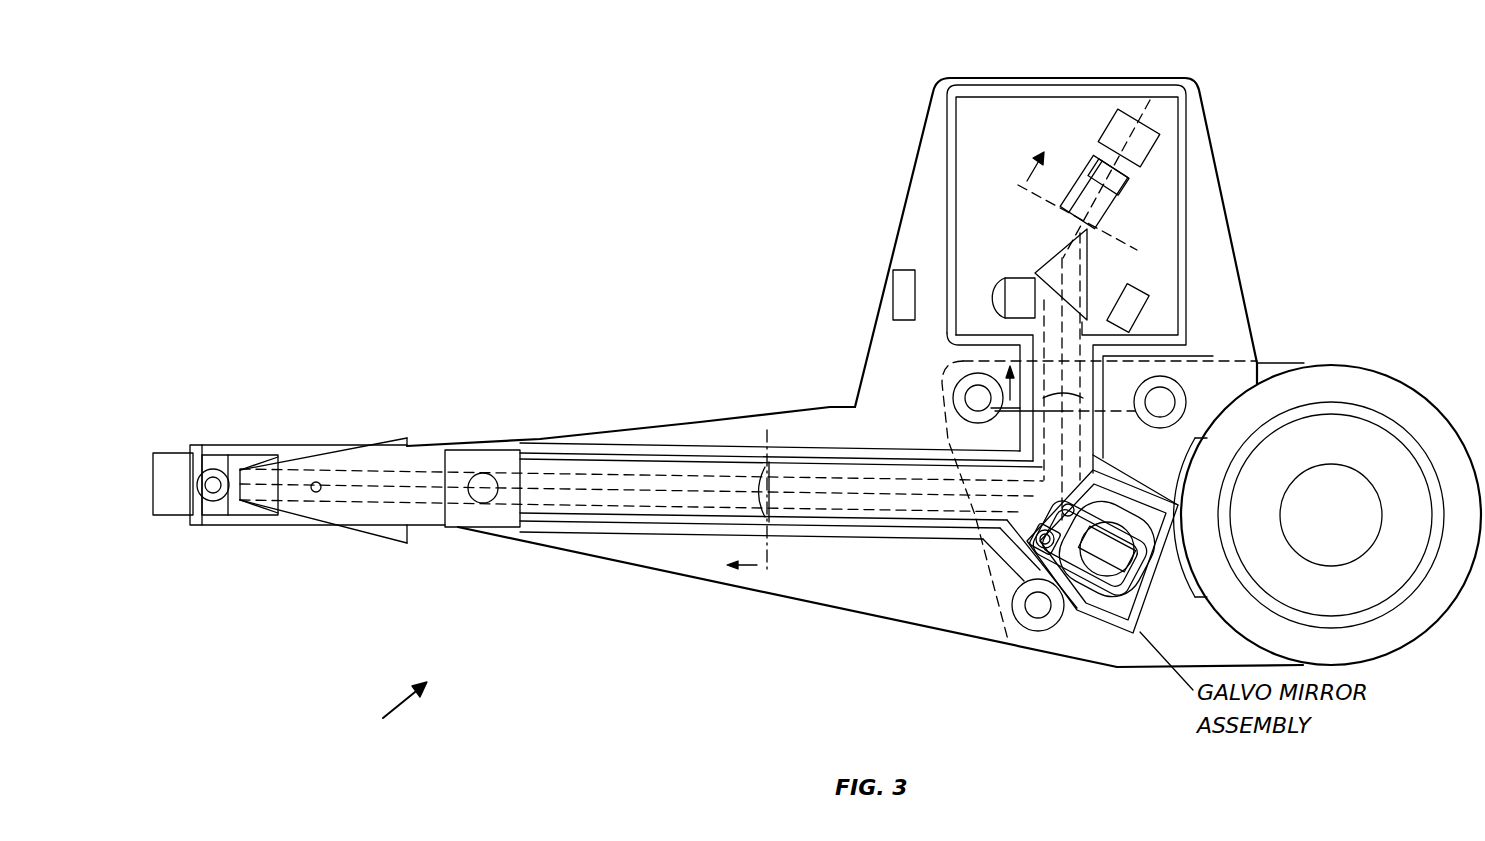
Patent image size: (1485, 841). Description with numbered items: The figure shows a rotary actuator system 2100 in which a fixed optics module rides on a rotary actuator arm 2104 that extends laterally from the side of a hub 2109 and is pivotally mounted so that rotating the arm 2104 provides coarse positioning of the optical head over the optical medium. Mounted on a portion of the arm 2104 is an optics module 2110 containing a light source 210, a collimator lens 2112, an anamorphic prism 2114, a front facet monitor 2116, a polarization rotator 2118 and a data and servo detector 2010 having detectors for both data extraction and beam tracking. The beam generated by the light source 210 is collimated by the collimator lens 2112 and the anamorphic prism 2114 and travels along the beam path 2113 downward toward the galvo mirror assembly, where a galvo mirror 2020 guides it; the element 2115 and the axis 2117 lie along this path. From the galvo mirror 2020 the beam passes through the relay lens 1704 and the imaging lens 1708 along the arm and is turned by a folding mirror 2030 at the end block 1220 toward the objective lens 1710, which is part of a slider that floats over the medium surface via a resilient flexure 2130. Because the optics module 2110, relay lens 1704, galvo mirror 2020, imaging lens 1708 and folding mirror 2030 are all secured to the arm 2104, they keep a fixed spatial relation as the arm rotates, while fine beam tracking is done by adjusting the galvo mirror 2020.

The rotary actuator system 2100 is at (386, 718).
The rotary actuator arm 2104 is at (960, 637).
The hub 2109 is at (1387, 378).
The optics module 2110 is at (992, 78).
The collimator lens 2112 is at (1118, 218).
The light beam path 2113 is at (1033, 194).
The anamorphic prism 2114 is at (1090, 290).
The lens 2115 is at (1060, 415).
The front facet monitor 2116 is at (1150, 305).
The optical axis plane 2117 is at (770, 505).
The polarization rotator 2118 is at (1015, 278).
The resilient flexure 2130 is at (390, 445).
The light source 210 is at (1160, 140).
The relay lens 1704 is at (1075, 402).
The imaging lens 1708 is at (752, 513).
The objective lens 1710 is at (213, 463).
The end block 1220 is at (270, 516).
The data and servo detector 2010 is at (902, 270).
The galvo mirror 2020 is at (1038, 530).
The folding mirror 2030 is at (172, 516).